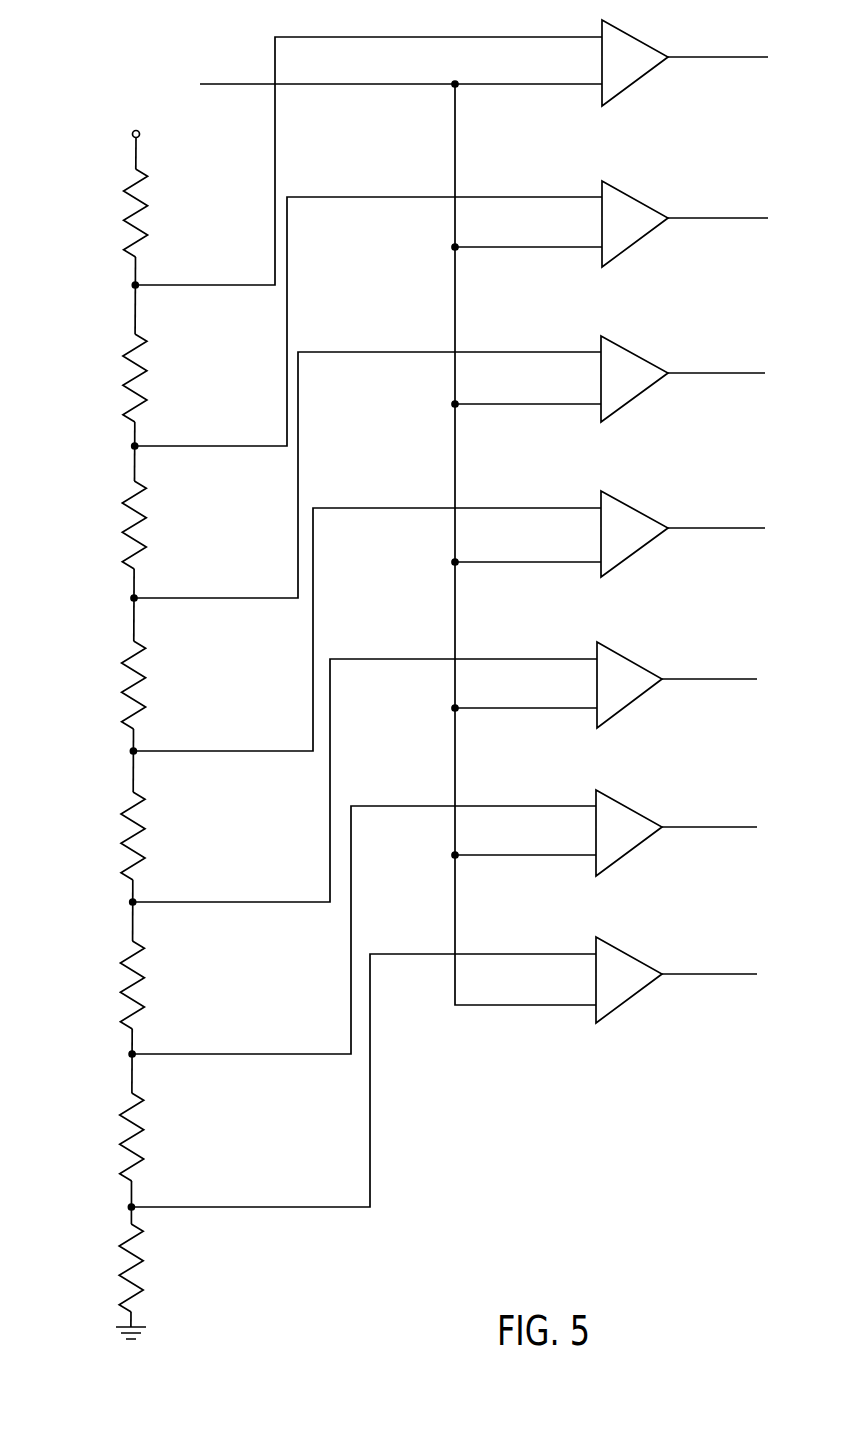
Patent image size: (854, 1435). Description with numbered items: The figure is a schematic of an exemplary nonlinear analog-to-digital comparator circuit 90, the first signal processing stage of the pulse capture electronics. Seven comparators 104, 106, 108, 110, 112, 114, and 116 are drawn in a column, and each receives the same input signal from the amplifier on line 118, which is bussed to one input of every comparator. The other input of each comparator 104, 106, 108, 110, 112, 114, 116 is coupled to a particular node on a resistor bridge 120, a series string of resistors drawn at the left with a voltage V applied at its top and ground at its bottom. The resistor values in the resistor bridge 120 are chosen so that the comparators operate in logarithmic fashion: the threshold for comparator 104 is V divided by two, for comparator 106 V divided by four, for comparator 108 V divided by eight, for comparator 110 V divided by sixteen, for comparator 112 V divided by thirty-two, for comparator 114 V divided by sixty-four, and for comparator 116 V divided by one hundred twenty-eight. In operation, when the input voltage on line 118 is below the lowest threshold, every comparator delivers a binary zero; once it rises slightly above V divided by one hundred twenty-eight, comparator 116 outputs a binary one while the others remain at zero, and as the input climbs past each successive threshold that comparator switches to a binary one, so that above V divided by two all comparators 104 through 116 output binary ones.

The analog-to-digital comparator circuit 90 is at (521, 1168).
The comparator 104 is at (635, 50).
The comparator 106 is at (635, 210).
The comparator 108 is at (635, 367).
The comparator 110 is at (635, 522).
The comparator 112 is at (629, 673).
The comparator 114 is at (629, 820).
The comparator 116 is at (629, 968).
The line 118 is at (236, 83).
The resistor bridge 120 is at (132, 149).